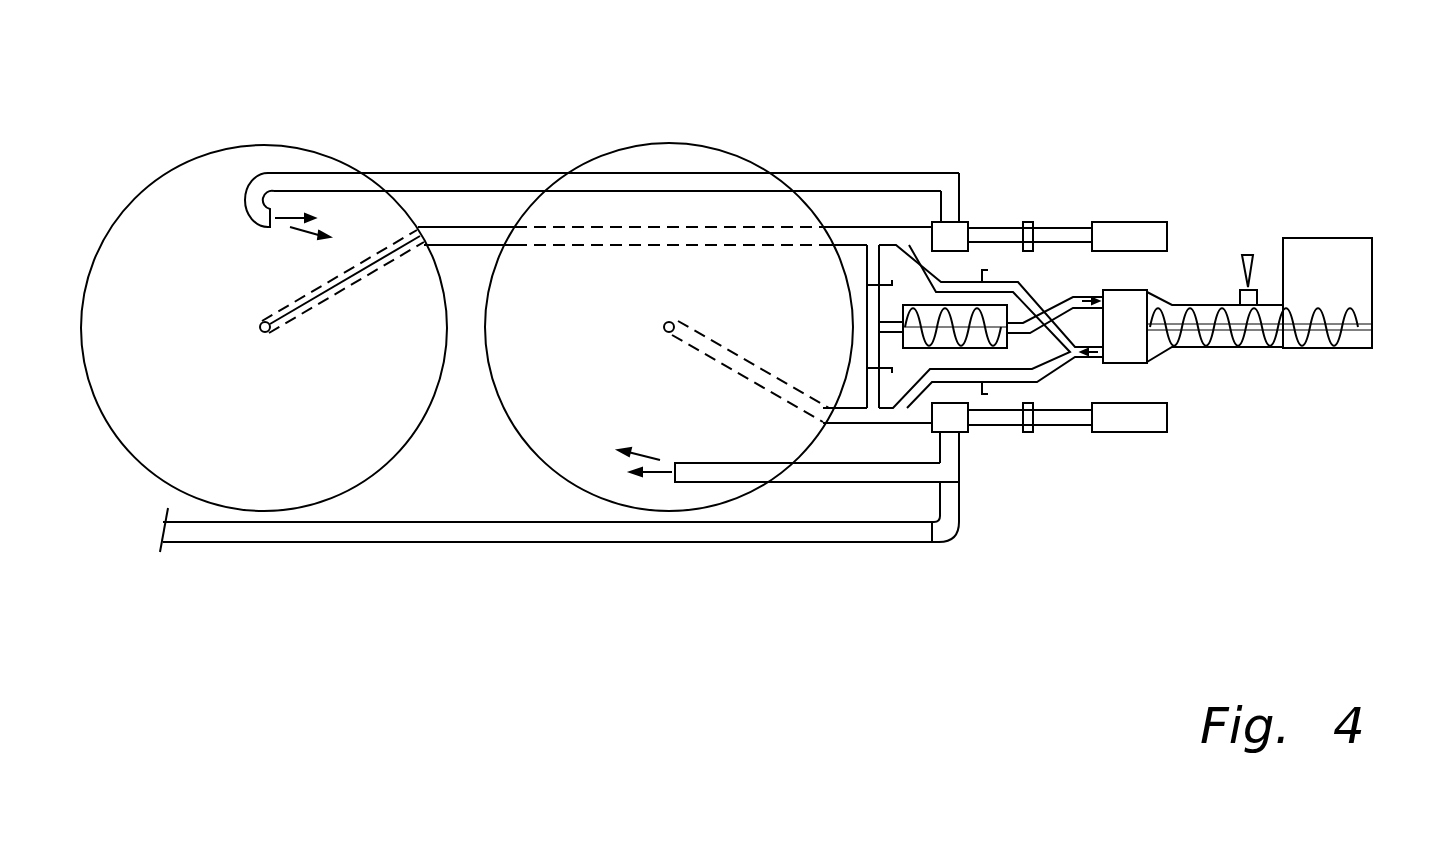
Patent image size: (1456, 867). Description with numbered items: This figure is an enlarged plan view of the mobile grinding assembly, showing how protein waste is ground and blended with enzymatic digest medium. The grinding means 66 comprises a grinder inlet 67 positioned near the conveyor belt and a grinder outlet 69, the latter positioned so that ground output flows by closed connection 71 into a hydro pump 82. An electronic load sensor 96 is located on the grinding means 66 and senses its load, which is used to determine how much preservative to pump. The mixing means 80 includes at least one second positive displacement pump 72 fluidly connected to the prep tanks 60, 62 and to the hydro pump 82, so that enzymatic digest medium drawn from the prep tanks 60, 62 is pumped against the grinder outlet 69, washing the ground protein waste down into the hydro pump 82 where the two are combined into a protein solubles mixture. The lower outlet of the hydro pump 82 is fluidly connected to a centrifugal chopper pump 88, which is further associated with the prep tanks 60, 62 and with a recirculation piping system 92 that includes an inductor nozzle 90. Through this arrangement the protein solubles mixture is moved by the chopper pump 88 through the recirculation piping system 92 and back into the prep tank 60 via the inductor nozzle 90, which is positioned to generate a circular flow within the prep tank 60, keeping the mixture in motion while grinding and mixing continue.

The mixing means 80 is at (727, 90).
The prep tank 60 is at (327, 500).
The prep tank 62 is at (582, 488).
The recirculation piping system 92 is at (291, 173).
The inductor nozzle 90 is at (473, 227).
The second positive displacement pump 72 is at (937, 228).
The centrifugal chopper pump 88 is at (1107, 222).
The hydro pump 82 is at (957, 305).
The closed connection 71 is at (1148, 290).
The grinder outlet 69 is at (1150, 325).
The grinder inlet 67 is at (1387, 317).
The grinding means 66 is at (1323, 183).
The electronic load sensor 96 is at (1250, 255).